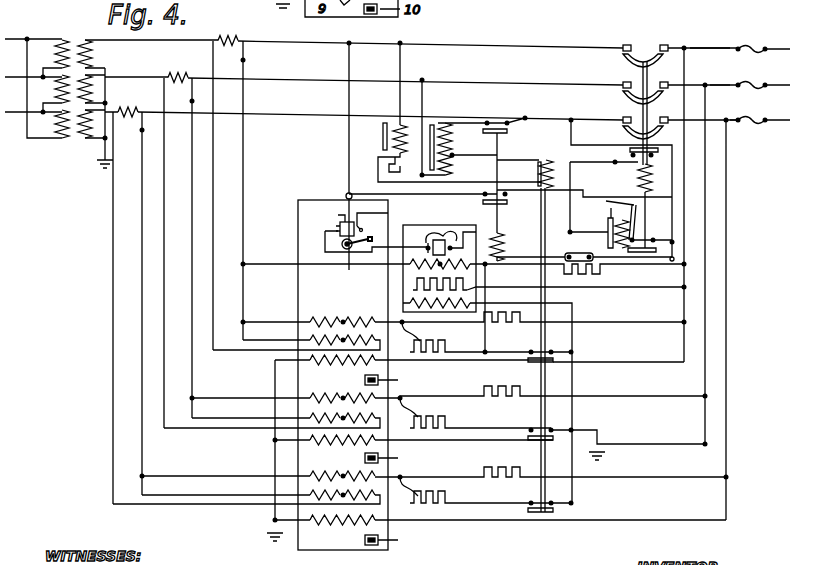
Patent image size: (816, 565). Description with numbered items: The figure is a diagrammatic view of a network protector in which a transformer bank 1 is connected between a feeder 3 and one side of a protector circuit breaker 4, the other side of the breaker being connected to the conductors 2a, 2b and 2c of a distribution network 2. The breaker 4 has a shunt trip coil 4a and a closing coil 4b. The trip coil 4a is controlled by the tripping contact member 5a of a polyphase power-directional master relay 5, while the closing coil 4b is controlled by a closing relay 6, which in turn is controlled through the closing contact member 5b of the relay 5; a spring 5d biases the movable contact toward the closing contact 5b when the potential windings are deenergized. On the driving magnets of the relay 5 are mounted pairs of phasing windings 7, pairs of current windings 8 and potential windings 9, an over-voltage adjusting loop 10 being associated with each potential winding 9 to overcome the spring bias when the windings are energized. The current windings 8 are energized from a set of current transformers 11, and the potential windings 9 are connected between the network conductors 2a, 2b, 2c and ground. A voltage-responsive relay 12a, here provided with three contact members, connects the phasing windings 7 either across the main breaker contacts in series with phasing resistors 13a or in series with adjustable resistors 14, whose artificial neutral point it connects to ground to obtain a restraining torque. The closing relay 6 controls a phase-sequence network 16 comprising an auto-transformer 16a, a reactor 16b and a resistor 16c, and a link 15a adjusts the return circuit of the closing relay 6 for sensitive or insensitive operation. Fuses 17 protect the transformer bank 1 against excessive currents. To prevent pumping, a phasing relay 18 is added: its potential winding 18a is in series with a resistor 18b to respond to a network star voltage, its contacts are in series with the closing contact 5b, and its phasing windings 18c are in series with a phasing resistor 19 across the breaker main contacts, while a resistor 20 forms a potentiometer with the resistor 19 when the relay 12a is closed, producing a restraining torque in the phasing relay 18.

The transformer bank 1 is at (72, 35).
The distribution network 2 is at (790, 43).
The network conductor 2a is at (710, 37).
The network conductor 2b is at (721, 73).
The network conductor 2c is at (726, 108).
The feeder 3 is at (18, 36).
The protector circuit breaker 4 is at (652, 39).
The shunt trip coil 4a is at (608, 230).
The closing coil 4b is at (656, 178).
The power-directional master relay 5 is at (330, 195).
The tripping contact member 5a is at (368, 236).
The closing contact member 5b is at (338, 229).
The spring 5d is at (341, 246).
The closing relay 6 is at (505, 239).
The phasing windings 7 is at (343, 316).
The current windings 8 is at (335, 338).
The potential winding 9 is at (325, 363).
The over-voltage adjusting loop 10 is at (391, 460).
The current transformers 11 is at (190, 60).
The voltage-responsive relay 12a is at (540, 210).
The phasing resistors 13a is at (504, 322).
The adjustable resistors 14 is at (448, 342).
The link 15a is at (590, 252).
The phase-sequence network 16 is at (448, 109).
The auto-transformer 16a is at (452, 150).
The reactor 16b is at (385, 150).
The resistor 16c is at (383, 168).
The fuses 17 is at (752, 72).
The phasing relay 18 is at (452, 225).
The potential winding 18a is at (410, 304).
The resistor 18b is at (413, 286).
The phasing windings 18c is at (410, 267).
The phasing resistor 19 is at (604, 272).
The resistor 20 is at (483, 351).